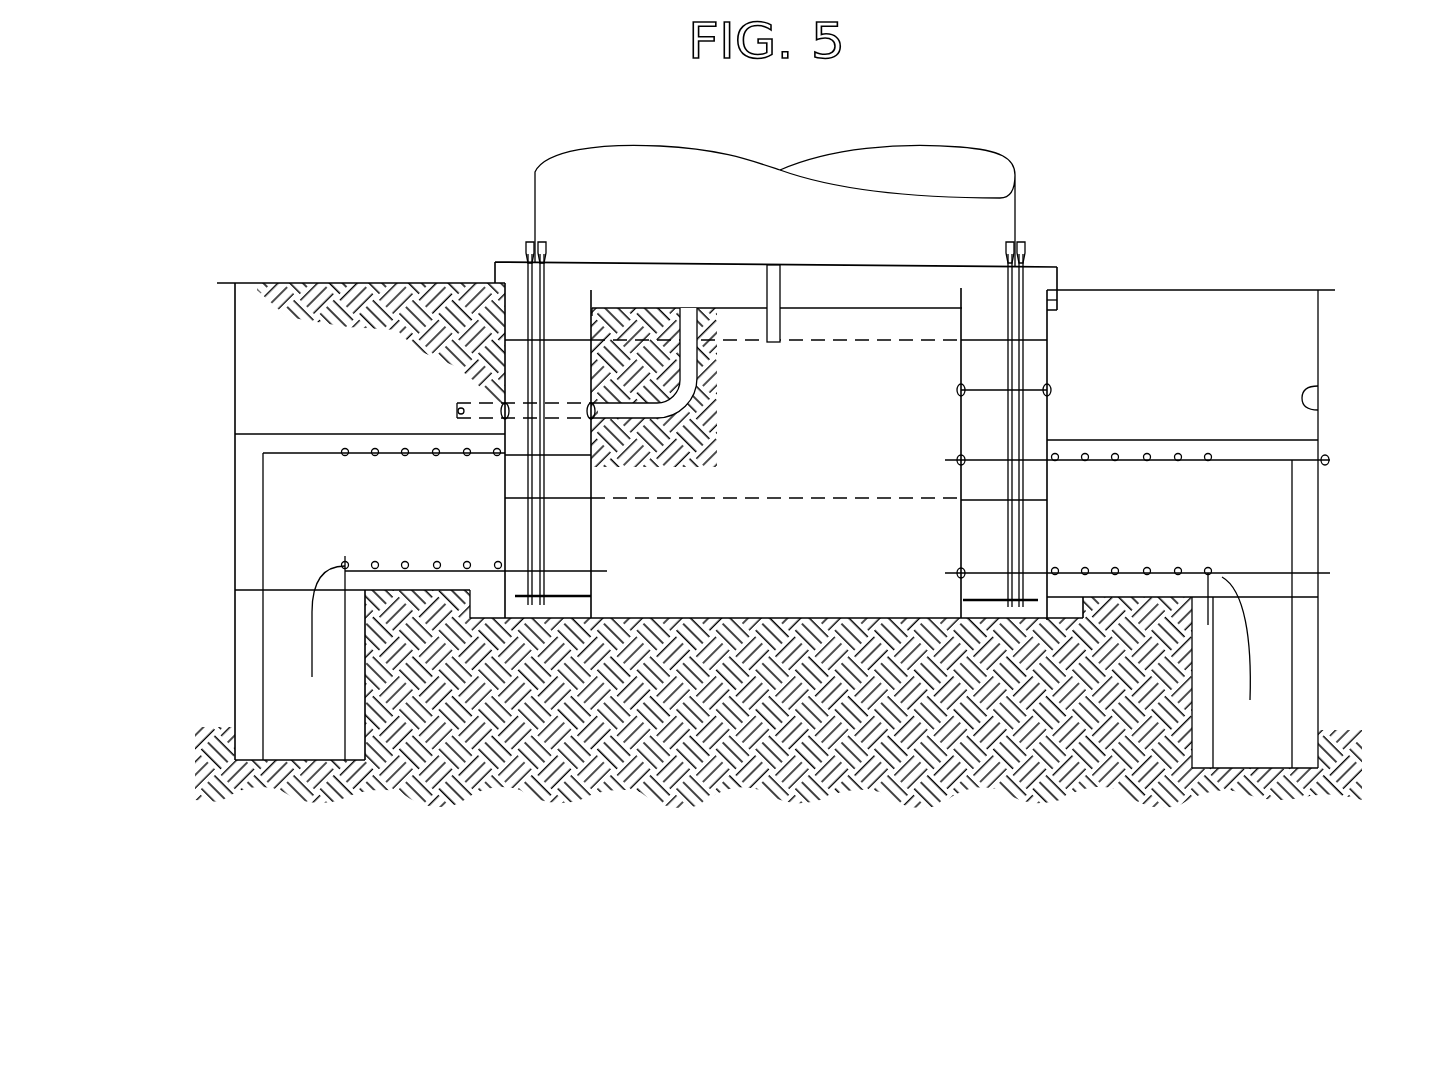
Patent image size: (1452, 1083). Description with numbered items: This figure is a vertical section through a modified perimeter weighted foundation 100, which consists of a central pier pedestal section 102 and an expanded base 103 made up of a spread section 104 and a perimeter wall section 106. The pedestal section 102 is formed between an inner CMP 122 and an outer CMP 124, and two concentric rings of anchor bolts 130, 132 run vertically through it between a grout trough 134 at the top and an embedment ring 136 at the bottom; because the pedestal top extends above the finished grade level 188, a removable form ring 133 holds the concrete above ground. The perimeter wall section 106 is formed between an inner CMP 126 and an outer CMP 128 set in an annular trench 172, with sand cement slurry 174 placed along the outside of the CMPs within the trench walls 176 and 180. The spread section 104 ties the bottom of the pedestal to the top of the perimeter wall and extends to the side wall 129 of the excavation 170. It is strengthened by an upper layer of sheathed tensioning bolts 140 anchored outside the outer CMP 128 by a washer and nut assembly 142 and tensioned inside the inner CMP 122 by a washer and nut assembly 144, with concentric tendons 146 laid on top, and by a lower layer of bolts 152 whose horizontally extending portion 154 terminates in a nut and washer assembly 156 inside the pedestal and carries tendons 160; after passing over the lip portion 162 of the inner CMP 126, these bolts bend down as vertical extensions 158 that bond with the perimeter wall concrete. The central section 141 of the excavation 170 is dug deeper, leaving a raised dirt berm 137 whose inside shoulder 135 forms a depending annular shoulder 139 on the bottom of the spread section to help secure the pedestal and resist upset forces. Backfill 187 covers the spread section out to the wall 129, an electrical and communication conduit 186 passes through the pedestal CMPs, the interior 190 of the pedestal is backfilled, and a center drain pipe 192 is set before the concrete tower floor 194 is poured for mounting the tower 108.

The perimeter weighted foundation 100 is at (508, 258).
The pedestal section 102 is at (575, 261).
The expanded base 103 is at (235, 468).
The spread section 104 is at (308, 517).
The perimeter wall section 106 is at (293, 657).
The tower 108 is at (733, 173).
The inner CMP 122 is at (959, 435).
The outer CMP 124 is at (1050, 341).
The inner CMP 126 is at (1212, 740).
The outer CMP 128 is at (1293, 690).
The side wall 129 is at (1320, 392).
The anchor bolts 130 is at (1004, 258).
The anchor bolts 132 is at (1024, 256).
The removable form ring 133 is at (492, 276).
The grout trough 134 is at (1060, 267).
The inside shoulder 135 is at (485, 622).
The embedment ring 136 is at (565, 608).
The raised dirt berm 137 is at (392, 628).
The annular shoulder 139 is at (481, 592).
The upper layer tensioning bolts 140 is at (1128, 457).
The central section 141 is at (780, 620).
The washer and nut assembly 142 is at (1325, 462).
The washer and nut assembly 144 is at (946, 460).
The reinforcing tendons 146 is at (1207, 456).
The lower layer tensioning bolts 152 is at (1068, 580).
The horizontally extending portion 154 is at (1132, 577).
The nut and washer assembly 156 is at (958, 574).
The vertical extensions 158 is at (1250, 700).
The tendons 160 is at (1180, 572).
The lip portion 162 is at (1222, 575).
The excavation 170 is at (1247, 318).
The annular trench 172 is at (245, 712).
The sand cement slurry 174 is at (357, 746).
The wall 176 is at (235, 560).
The wall 180 is at (345, 700).
The electrical and communication conduit 186 is at (697, 372).
The backfill 187 is at (378, 283).
The finished grade level 188 is at (232, 283).
The interior 190 is at (704, 447).
The center drain pipe 192 is at (792, 276).
The concrete tower floor 194 is at (694, 272).